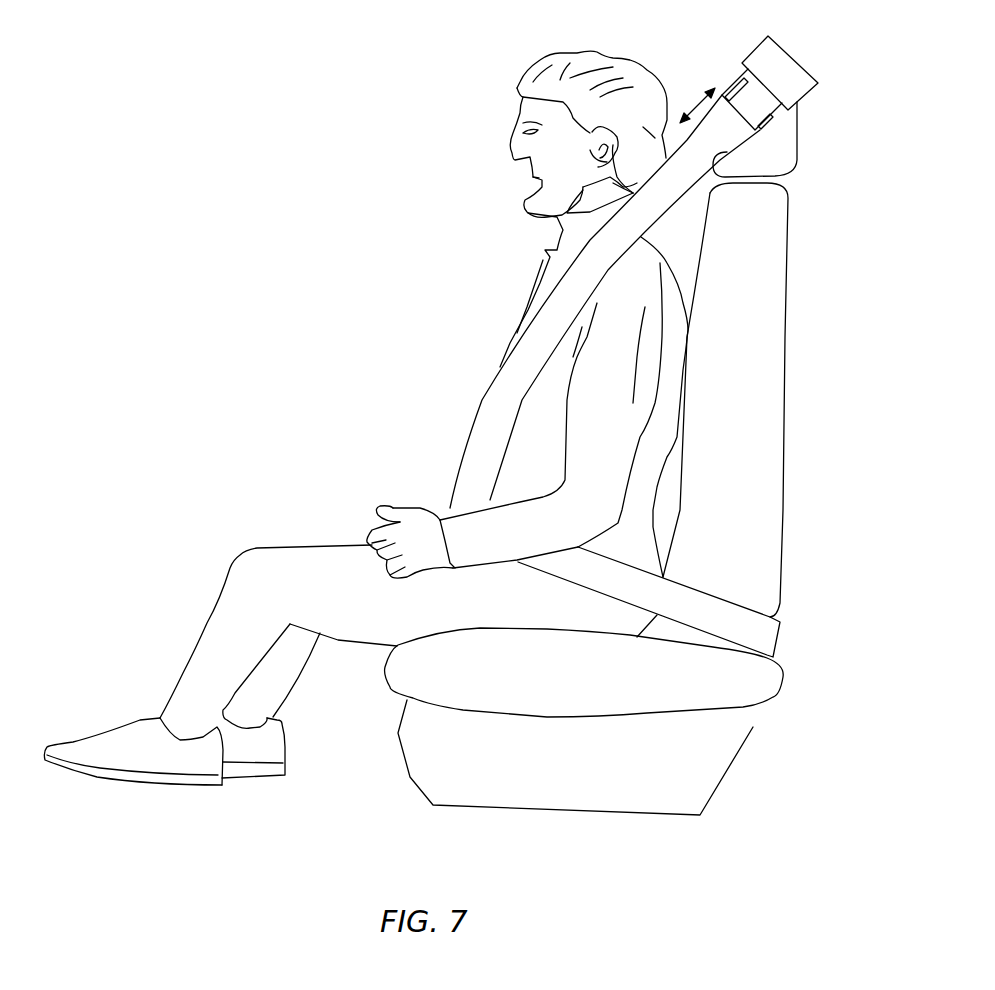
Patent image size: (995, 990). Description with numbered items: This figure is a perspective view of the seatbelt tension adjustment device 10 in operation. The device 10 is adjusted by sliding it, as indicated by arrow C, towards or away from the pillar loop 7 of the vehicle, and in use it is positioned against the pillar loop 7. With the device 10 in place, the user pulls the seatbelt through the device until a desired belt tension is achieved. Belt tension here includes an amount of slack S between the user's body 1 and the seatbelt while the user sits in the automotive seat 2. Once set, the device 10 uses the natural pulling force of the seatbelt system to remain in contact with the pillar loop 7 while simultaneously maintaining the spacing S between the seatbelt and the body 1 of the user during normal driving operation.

The user's body 1 is at (507, 193).
The automotive seat 2 is at (742, 415).
The pillar loop 7 is at (785, 80).
The seatbelt tension adjustment device 10 is at (753, 110).
The slack S is at (497, 373).
The arrow C is at (682, 120).